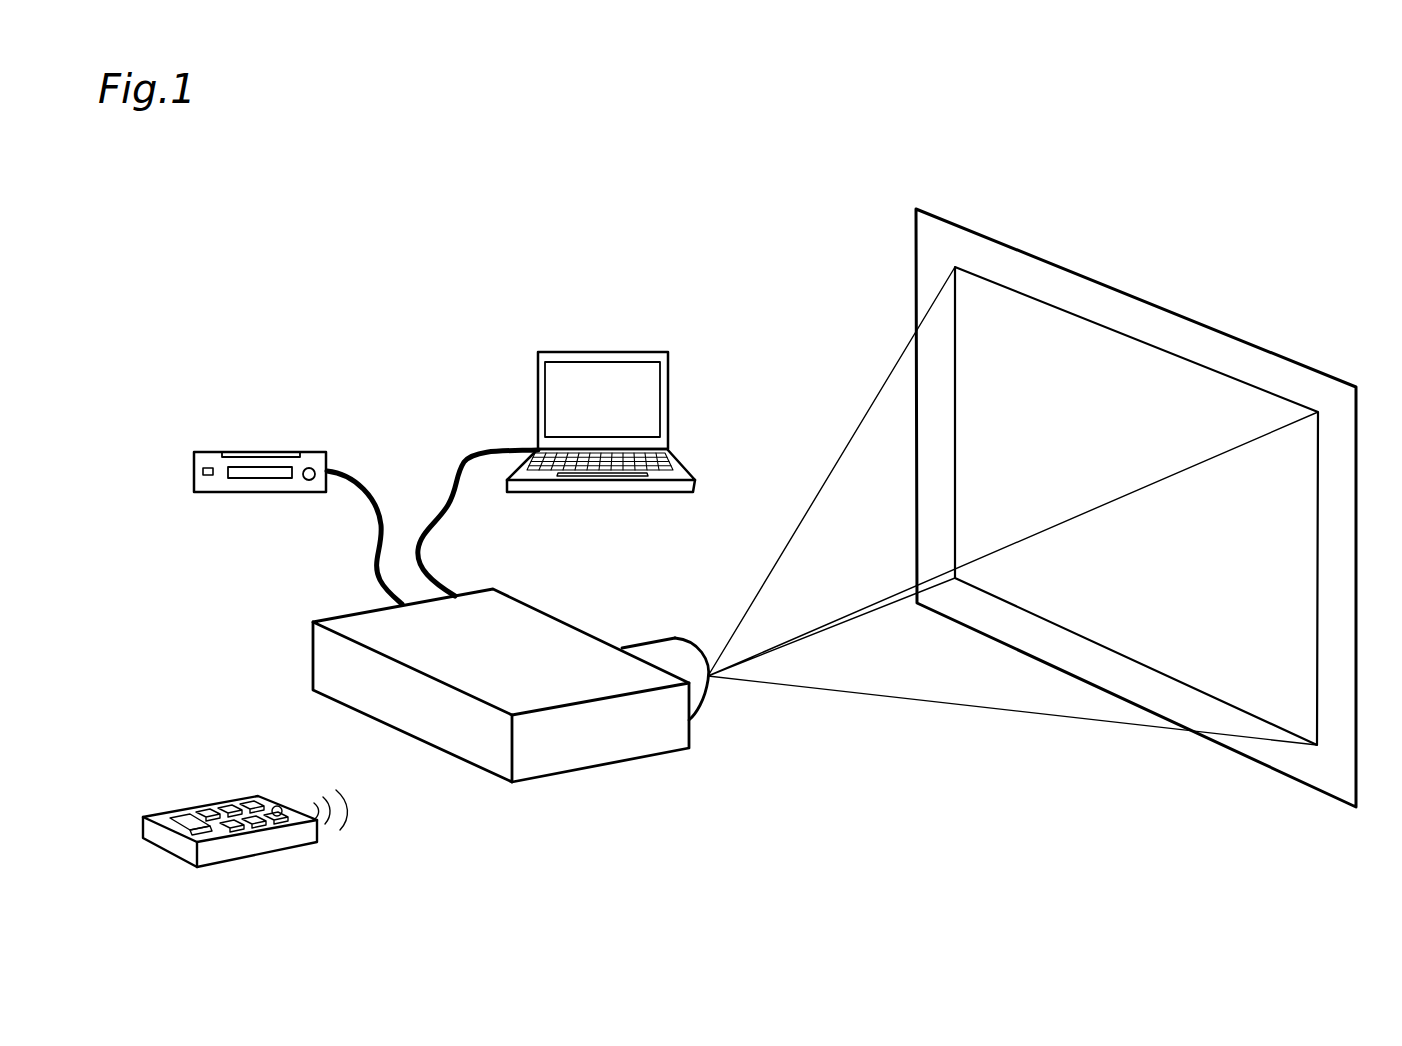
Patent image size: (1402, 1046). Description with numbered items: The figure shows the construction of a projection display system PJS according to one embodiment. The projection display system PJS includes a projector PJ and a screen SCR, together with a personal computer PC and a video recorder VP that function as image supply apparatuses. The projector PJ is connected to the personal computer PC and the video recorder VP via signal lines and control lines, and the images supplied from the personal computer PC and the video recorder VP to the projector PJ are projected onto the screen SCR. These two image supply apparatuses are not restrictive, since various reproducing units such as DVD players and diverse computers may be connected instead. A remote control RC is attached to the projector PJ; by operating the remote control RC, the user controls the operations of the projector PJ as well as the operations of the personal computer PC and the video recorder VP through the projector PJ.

The projection display system PJS is at (287, 209).
The video recorder VP is at (238, 447).
The personal computer PC is at (541, 333).
The projector PJ is at (645, 793).
The screen SCR is at (935, 260).
The remote control RC is at (216, 791).